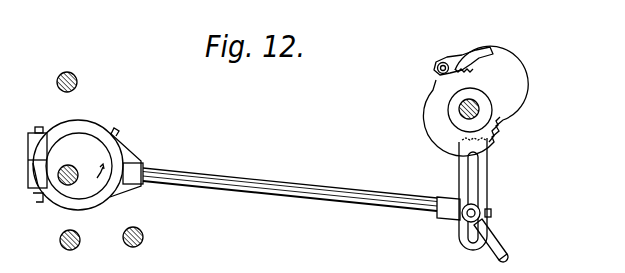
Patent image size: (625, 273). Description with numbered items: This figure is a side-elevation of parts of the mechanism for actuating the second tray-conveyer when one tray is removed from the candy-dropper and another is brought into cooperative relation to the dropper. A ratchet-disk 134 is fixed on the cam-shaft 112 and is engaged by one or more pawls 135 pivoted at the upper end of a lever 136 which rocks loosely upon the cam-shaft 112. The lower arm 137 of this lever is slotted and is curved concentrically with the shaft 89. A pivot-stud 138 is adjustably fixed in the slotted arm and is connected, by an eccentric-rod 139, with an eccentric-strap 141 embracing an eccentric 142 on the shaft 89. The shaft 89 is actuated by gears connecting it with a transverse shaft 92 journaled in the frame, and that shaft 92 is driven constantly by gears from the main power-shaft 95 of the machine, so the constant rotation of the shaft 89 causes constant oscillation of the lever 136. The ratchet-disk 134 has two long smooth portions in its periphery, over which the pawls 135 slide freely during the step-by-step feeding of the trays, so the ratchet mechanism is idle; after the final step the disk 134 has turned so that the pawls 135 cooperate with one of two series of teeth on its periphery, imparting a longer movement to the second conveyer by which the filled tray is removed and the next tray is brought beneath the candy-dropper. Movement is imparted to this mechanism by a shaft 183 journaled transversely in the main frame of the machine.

The shaft 183 is at (78, 81).
The eccentric-strap 141 is at (93, 128).
The eccentric 142 is at (79, 166).
The shaft 89 is at (66, 184).
The transverse shaft 92 is at (75, 248).
The main power-shaft 95 is at (143, 233).
The eccentric-rod 139 is at (265, 180).
The ratchet-disk 134 is at (498, 93).
The pawls 135 is at (464, 58).
The lever 136 is at (448, 115).
The cam-shaft 112 is at (480, 114).
The lower arm 137 is at (488, 183).
The pivot-stud 138 is at (492, 213).